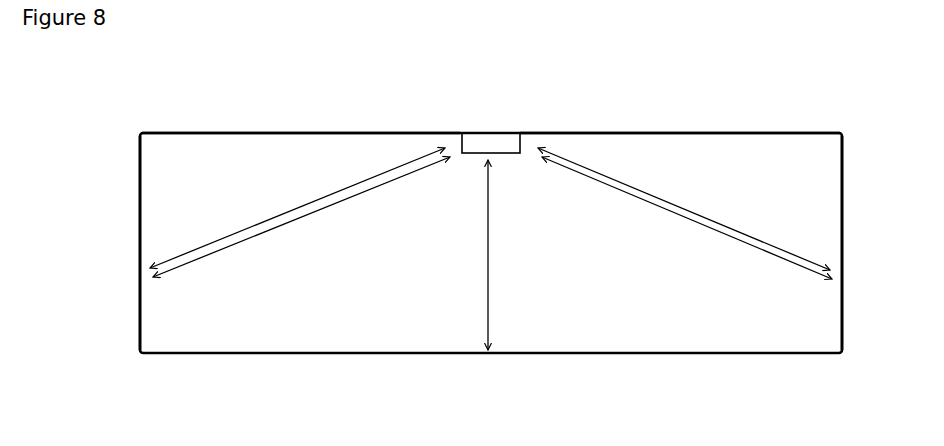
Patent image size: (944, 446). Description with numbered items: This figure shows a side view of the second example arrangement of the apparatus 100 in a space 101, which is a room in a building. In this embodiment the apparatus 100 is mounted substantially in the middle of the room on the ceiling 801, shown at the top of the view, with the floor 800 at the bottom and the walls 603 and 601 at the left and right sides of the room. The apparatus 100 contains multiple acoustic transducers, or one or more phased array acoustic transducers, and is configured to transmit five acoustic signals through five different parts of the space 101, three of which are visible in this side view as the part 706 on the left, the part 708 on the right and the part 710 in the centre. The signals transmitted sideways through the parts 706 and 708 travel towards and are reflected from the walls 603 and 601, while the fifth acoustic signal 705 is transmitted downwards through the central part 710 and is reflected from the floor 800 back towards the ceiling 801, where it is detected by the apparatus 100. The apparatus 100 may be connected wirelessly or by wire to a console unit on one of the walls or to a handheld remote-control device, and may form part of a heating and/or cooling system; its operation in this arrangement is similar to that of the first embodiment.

The apparatus 100 is at (468, 137).
The space 101 is at (693, 132).
The wall 601 is at (842, 232).
The wall 603 is at (138, 233).
The fifth acoustic signal 705 is at (490, 198).
The part of the space 706 is at (203, 208).
The part of the space 708 is at (787, 207).
The part of the space 710 is at (543, 313).
The floor 800 is at (308, 353).
The ceiling 801 is at (321, 133).